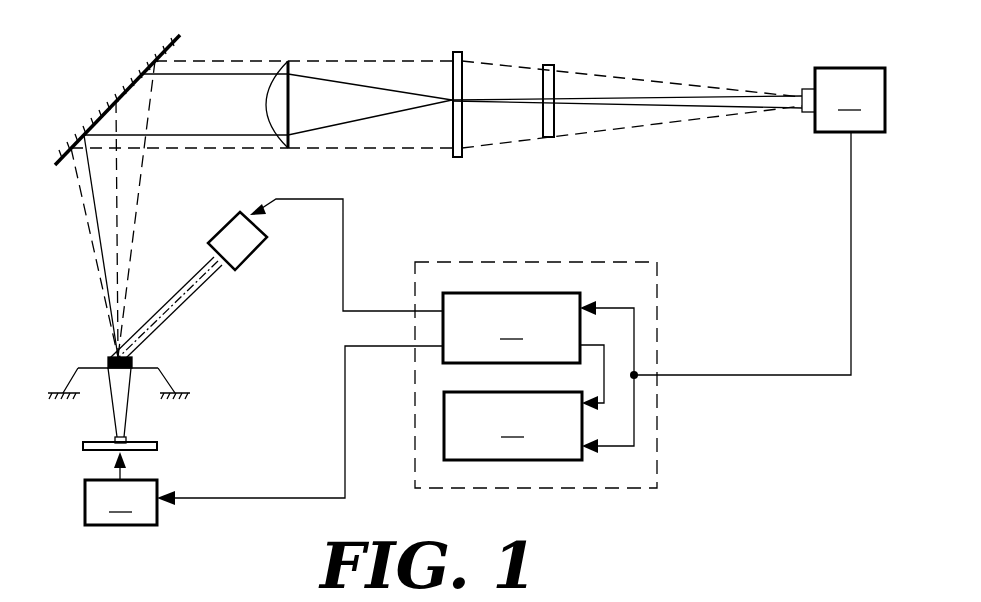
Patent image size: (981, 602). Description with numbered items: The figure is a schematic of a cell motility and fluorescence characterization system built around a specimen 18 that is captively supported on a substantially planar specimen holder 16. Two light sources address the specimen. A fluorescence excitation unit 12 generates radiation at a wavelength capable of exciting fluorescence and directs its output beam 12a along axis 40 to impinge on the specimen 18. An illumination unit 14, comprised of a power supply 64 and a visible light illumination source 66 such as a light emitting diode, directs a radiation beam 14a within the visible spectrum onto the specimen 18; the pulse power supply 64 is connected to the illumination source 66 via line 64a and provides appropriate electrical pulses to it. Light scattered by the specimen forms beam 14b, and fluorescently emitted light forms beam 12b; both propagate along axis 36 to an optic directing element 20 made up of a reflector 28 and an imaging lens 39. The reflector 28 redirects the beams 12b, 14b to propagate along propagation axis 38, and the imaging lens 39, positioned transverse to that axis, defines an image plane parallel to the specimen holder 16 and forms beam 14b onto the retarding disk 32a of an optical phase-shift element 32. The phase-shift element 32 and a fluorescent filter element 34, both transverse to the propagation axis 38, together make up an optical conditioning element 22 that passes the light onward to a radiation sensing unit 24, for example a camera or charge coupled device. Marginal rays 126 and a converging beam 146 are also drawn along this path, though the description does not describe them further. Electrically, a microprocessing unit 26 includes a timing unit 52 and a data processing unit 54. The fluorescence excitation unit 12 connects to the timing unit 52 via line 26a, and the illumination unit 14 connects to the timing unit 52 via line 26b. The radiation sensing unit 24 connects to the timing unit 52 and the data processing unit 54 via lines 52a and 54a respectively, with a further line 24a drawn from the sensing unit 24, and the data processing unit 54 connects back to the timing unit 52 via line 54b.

The fluorescence excitation unit 12 is at (262, 246).
The output beam 12a is at (200, 288).
The beam 12b is at (92, 250).
The illumination unit 14 is at (66, 505).
The radiation beam 14a is at (128, 418).
The scattered beam 14b is at (90, 222).
The specimen holder 16 is at (78, 374).
The specimen 18 is at (108, 362).
The optic directing element 20 is at (240, 46).
The optical conditioning element 22 is at (470, 40).
The radiation sensing unit 24 is at (843, 100).
The line 24a is at (778, 376).
The microprocessing unit 26 is at (578, 262).
The line 26a is at (343, 232).
The line 26b is at (290, 500).
The reflector 28 is at (58, 166).
The optical phase-shift element 32 is at (460, 158).
The retarding disk 32a is at (452, 100).
The fluorescent filter element 34 is at (549, 138).
The axis 36 is at (120, 208).
The propagation axis 38 is at (228, 118).
The imaging lens 39 is at (278, 136).
The axis 40 is at (158, 320).
The timing unit 52 is at (511, 328).
The line 52a is at (634, 320).
The data processing unit 54 is at (513, 426).
The line 54a is at (636, 438).
The line 54b is at (606, 400).
The power supply 64 is at (121, 502).
The line 64a is at (115, 476).
The illumination source 66 is at (157, 447).
The marginal ray 126 is at (433, 150).
The converging beam 146 is at (362, 124).